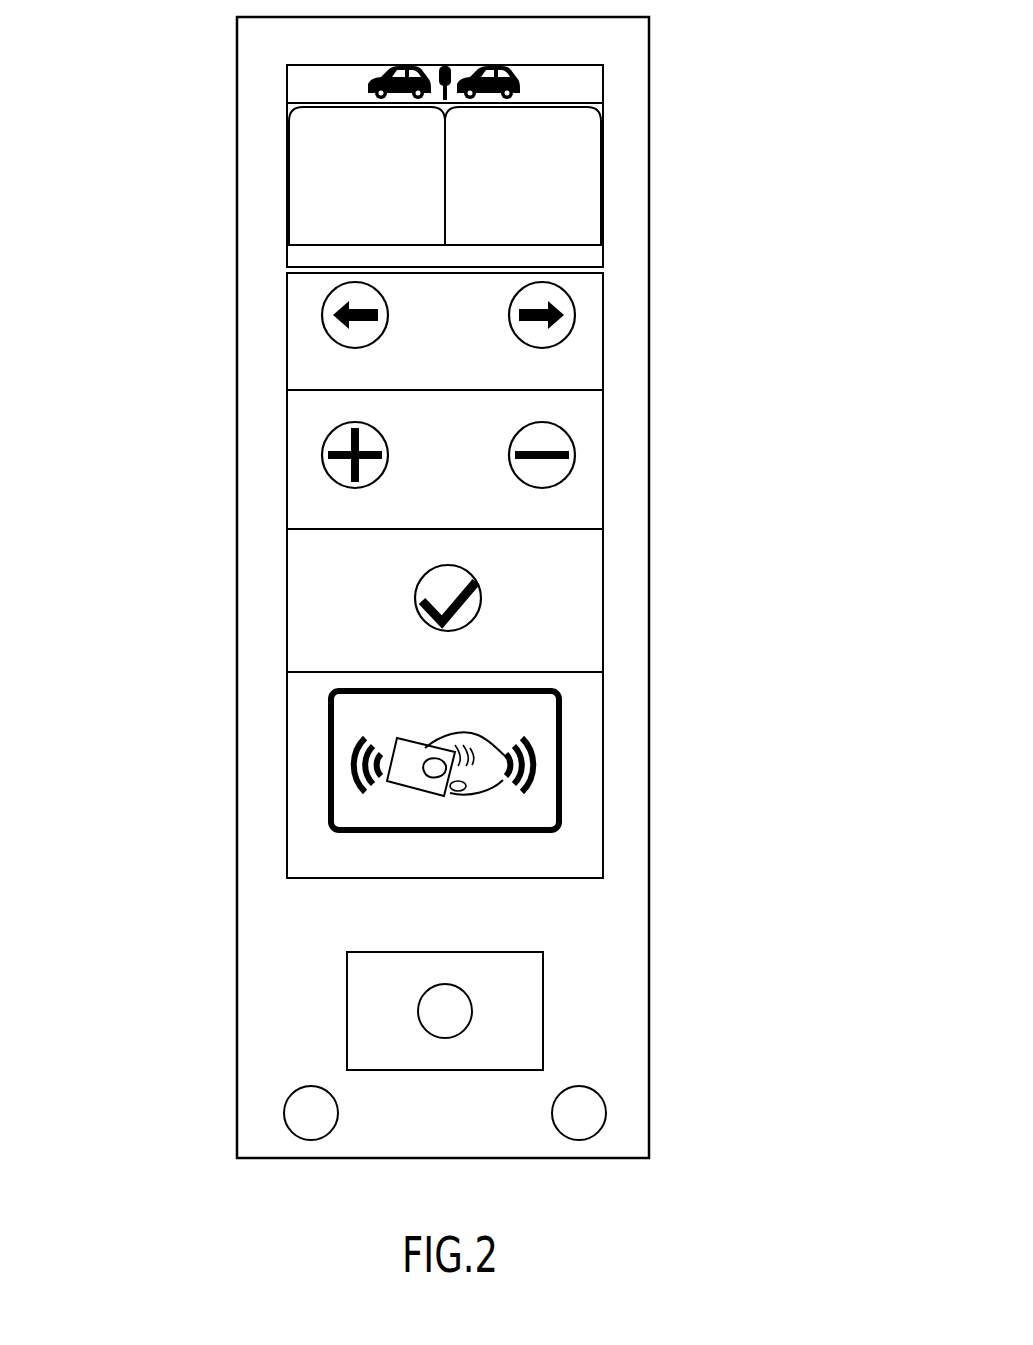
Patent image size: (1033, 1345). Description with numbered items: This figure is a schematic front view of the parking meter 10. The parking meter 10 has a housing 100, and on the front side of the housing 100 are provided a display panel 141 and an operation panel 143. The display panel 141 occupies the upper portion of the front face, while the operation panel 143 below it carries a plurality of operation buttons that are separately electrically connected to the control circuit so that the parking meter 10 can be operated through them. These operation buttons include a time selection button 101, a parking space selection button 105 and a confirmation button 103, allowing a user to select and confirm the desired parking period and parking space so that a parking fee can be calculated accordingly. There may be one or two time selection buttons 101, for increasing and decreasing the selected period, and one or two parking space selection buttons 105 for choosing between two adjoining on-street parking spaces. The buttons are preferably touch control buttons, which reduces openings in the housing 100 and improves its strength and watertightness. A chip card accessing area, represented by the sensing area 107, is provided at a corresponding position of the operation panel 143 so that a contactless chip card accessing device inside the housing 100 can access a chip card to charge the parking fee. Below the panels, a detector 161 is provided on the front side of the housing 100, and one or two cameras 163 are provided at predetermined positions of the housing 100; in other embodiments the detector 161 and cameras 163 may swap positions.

The parking meter 10 is at (692, 424).
The housing 100 is at (237, 55).
The time selection button 101 is at (321, 458).
The confirmation button 103 is at (416, 605).
The parking space selection button 105 is at (321, 315).
The sensing area 107 is at (327, 768).
The display panel 141 is at (598, 196).
The operation panel 143 is at (632, 670).
The detector 161 is at (418, 1011).
The cameras 163 is at (284, 1113).